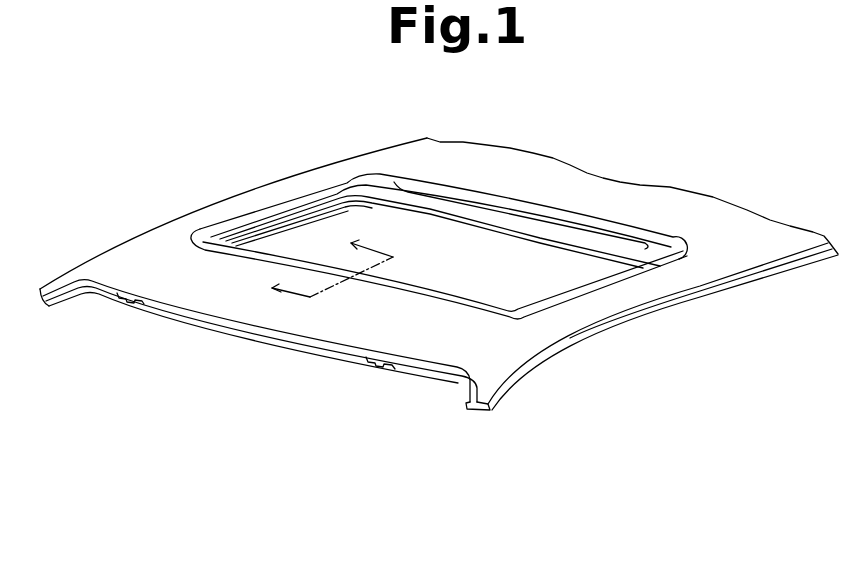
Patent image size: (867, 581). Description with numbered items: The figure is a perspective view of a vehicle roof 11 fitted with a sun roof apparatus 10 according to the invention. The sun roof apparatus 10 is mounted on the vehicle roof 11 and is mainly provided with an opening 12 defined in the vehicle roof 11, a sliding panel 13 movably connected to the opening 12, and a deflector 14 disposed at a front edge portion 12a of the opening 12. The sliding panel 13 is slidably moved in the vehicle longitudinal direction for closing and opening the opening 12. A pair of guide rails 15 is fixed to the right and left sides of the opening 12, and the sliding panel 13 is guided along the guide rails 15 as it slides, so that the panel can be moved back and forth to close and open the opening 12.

The sun roof apparatus 10 is at (235, 264).
The vehicle roof 11 is at (557, 343).
The opening 12 is at (612, 278).
The front edge portion 12a is at (456, 294).
The sliding panel 13 is at (556, 214).
The deflector 14 is at (390, 280).
The guide rail 15 is at (303, 214).